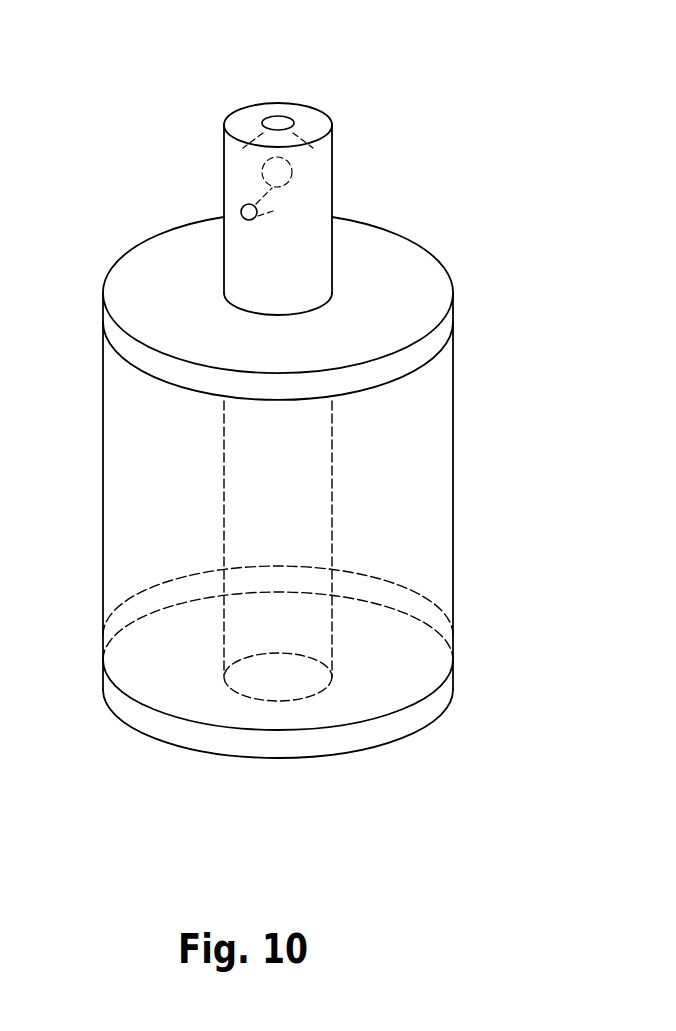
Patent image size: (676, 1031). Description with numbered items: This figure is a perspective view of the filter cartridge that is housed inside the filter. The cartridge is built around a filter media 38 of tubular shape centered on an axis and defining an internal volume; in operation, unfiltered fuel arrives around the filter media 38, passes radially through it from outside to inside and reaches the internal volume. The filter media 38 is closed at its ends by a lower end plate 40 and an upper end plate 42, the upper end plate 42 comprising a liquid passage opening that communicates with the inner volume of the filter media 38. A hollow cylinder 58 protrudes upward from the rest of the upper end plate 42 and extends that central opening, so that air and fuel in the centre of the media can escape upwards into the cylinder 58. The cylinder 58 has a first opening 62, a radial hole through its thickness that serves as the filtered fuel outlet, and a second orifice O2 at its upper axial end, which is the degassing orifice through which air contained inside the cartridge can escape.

The second orifice O2 is at (277, 106).
The hollow cylinder 58 is at (320, 183).
The first opening 62 is at (232, 220).
The upper end plate 42 is at (403, 282).
The filter media 38 is at (385, 488).
The lower end plate 40 is at (423, 707).